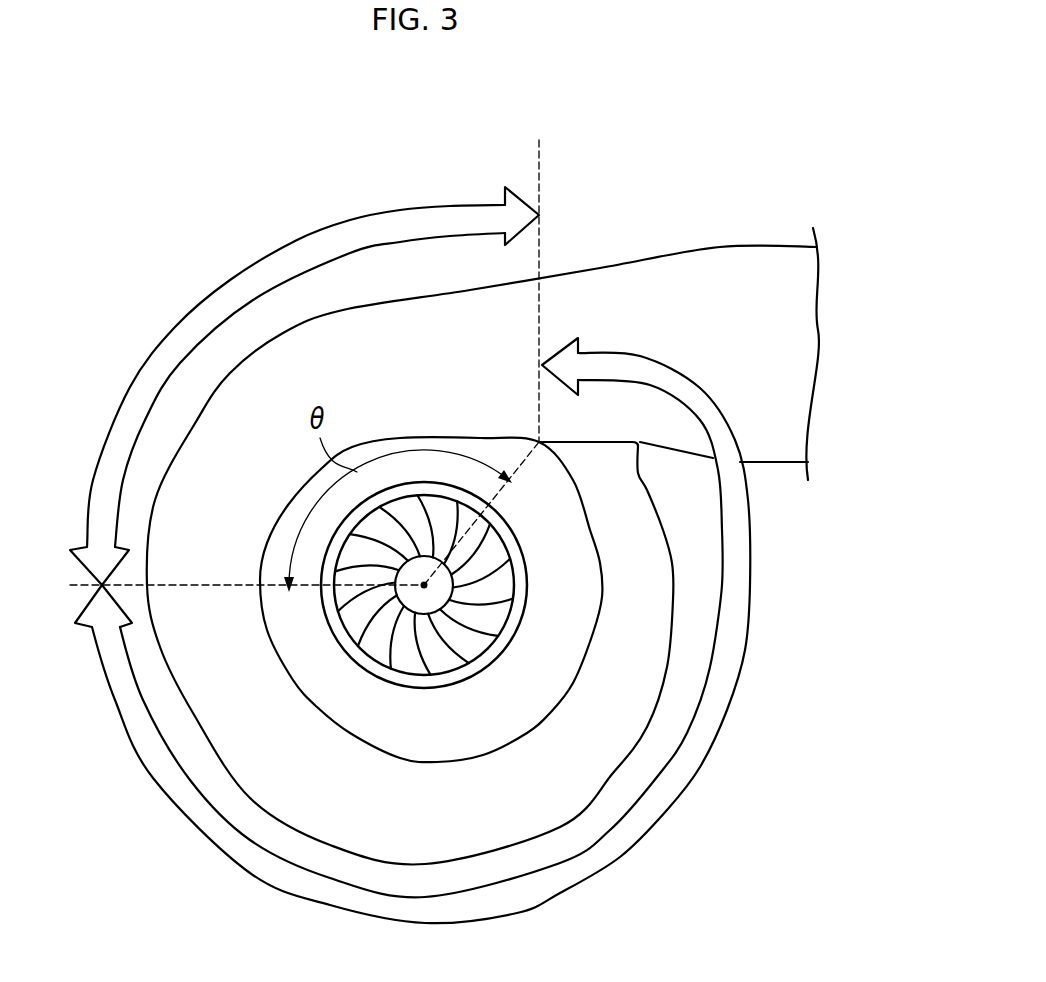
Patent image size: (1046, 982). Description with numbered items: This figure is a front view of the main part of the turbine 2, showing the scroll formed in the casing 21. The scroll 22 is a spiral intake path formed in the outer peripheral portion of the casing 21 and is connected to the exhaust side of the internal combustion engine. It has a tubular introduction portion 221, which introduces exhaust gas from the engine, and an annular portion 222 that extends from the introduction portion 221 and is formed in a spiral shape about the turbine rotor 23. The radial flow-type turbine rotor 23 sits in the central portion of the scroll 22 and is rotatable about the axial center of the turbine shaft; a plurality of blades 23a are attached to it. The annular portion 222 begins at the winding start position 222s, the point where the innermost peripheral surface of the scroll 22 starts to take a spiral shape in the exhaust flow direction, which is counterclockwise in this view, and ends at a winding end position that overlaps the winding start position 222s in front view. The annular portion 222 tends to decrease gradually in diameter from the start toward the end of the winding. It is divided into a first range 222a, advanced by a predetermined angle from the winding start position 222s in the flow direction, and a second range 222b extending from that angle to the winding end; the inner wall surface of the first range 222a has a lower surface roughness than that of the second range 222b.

The turbine 2 is at (448, 483).
The casing 21 is at (446, 526).
The introduction portion 221 is at (679, 316).
The scroll 22 is at (482, 539).
The annular portion 222 is at (446, 533).
The first range 222a is at (296, 376).
The second range 222b is at (457, 638).
The winding start position 222s is at (469, 292).
The turbine rotor 23 is at (573, 659).
The blades 23a is at (580, 585).